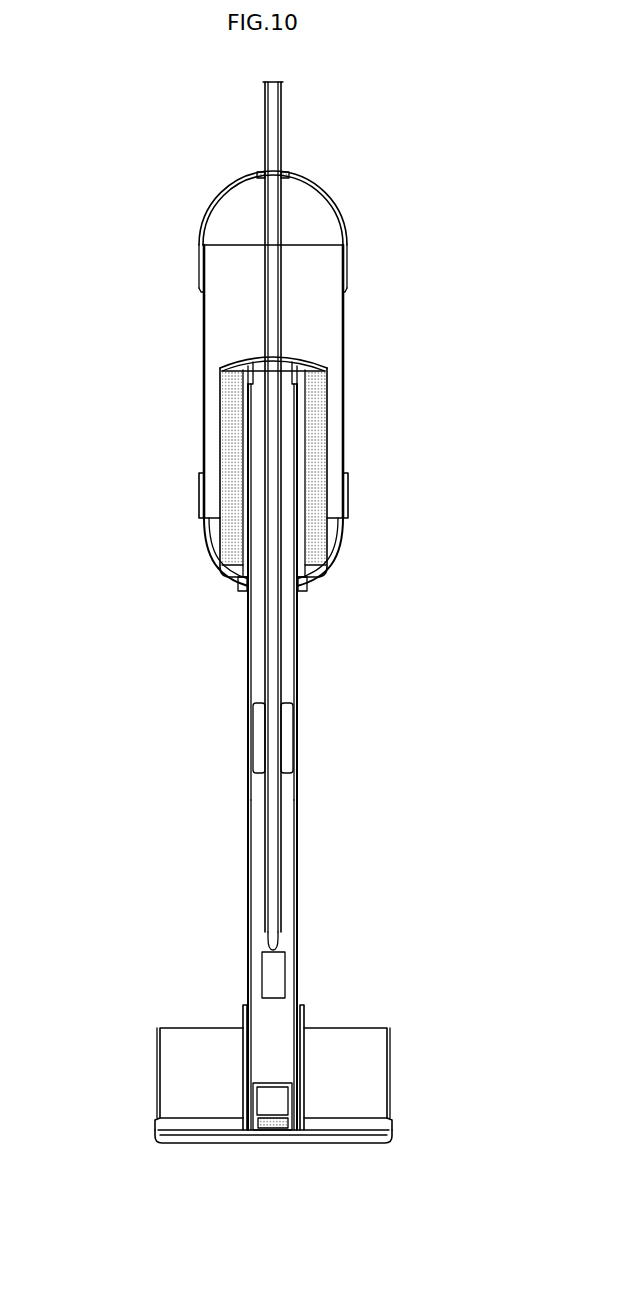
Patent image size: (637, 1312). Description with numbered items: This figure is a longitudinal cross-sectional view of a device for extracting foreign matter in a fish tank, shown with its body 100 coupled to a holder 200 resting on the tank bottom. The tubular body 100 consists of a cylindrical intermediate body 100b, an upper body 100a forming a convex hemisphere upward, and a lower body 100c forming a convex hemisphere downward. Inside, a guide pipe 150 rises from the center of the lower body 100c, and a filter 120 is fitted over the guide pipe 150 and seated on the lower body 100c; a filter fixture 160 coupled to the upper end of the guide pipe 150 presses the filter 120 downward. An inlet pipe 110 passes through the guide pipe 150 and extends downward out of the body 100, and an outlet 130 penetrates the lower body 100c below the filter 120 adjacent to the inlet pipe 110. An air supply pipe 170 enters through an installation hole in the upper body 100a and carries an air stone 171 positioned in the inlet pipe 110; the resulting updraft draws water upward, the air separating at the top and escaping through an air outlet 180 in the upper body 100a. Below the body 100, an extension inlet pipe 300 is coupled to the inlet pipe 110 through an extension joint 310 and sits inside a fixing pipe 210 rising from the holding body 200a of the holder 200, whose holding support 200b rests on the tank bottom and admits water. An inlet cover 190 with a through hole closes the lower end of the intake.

The body 100 is at (337, 162).
The upper body 100a is at (200, 207).
The intermediate body 100b is at (204, 330).
The lower body 100c is at (200, 500).
The inlet pipe 110 is at (298, 624).
The filter 120 is at (322, 414).
The outlet 130 is at (240, 588).
The guide pipe 150 is at (240, 440).
The filter fixture 160 is at (320, 357).
The air supply pipe 170 is at (282, 674).
The air stone 171 is at (265, 972).
The air outlet 180 is at (262, 175).
The inlet cover 190 is at (246, 1143).
The holder 200 is at (402, 1002).
The holding body 200a is at (158, 1058).
The holding support 200b is at (158, 1125).
The fixing pipe 210 is at (243, 1035).
The extension inlet pipe 300 is at (298, 918).
The extension joint 310 is at (248, 738).